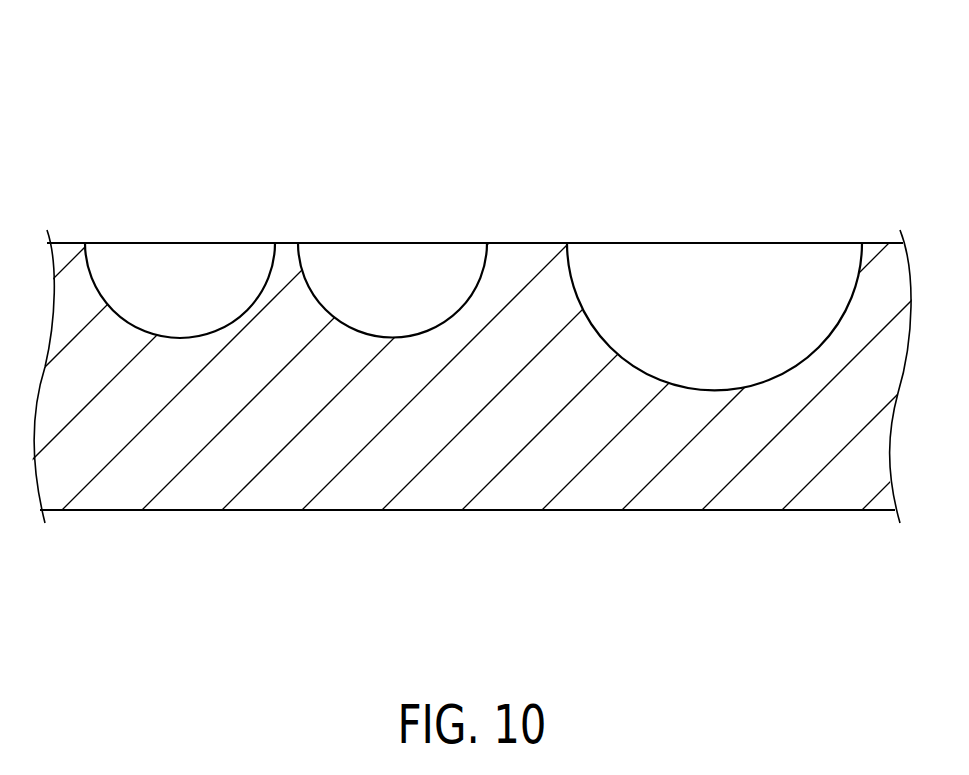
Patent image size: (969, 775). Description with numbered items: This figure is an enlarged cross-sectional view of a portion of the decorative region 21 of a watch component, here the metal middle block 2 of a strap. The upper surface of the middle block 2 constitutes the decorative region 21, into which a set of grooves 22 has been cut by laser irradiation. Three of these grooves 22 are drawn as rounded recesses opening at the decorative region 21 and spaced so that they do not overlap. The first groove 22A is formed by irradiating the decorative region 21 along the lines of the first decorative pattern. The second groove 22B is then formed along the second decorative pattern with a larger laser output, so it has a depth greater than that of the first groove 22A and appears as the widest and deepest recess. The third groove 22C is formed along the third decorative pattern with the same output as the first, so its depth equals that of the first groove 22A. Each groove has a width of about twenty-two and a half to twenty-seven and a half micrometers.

The middle block 2 is at (412, 545).
The decorative region 21 is at (748, 231).
The grooves 22 is at (242, 107).
The first groove 22A is at (183, 337).
The second groove 22B is at (610, 347).
The third groove 22C is at (377, 337).